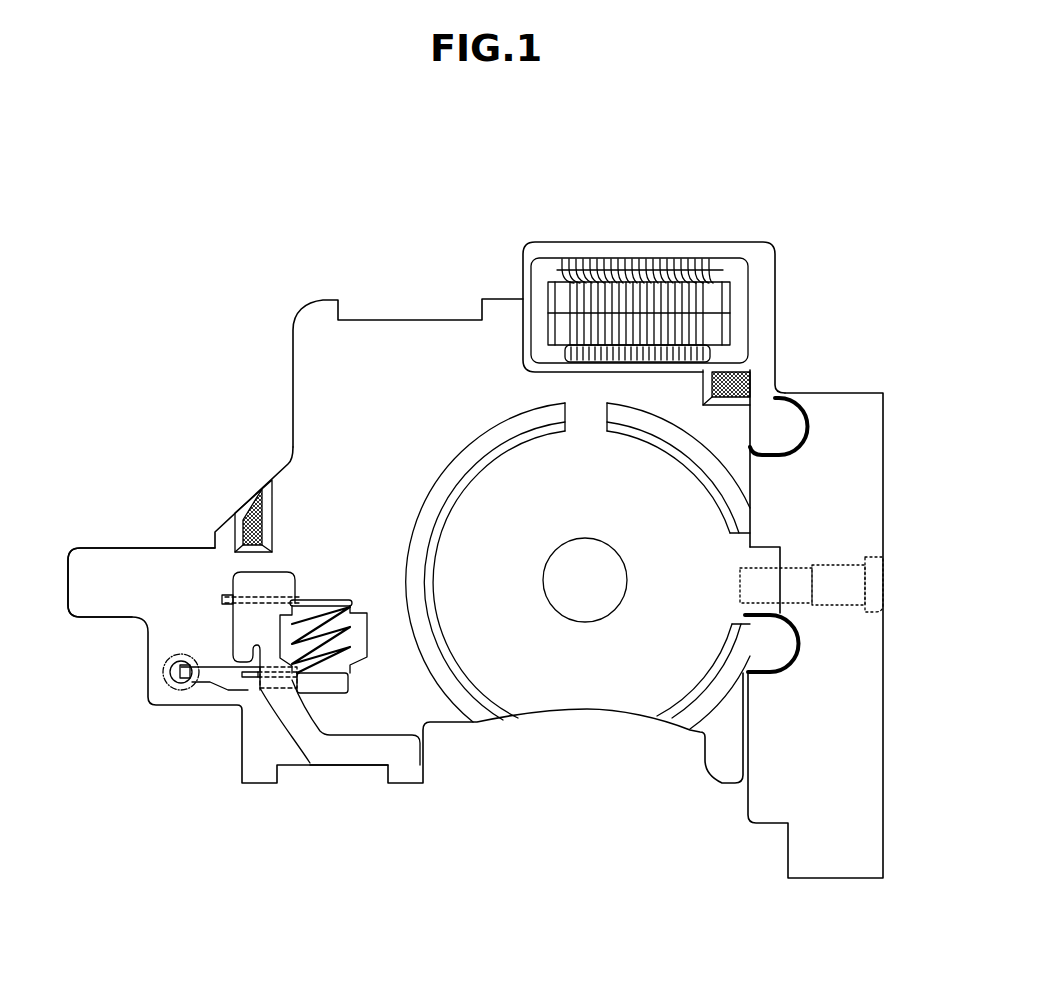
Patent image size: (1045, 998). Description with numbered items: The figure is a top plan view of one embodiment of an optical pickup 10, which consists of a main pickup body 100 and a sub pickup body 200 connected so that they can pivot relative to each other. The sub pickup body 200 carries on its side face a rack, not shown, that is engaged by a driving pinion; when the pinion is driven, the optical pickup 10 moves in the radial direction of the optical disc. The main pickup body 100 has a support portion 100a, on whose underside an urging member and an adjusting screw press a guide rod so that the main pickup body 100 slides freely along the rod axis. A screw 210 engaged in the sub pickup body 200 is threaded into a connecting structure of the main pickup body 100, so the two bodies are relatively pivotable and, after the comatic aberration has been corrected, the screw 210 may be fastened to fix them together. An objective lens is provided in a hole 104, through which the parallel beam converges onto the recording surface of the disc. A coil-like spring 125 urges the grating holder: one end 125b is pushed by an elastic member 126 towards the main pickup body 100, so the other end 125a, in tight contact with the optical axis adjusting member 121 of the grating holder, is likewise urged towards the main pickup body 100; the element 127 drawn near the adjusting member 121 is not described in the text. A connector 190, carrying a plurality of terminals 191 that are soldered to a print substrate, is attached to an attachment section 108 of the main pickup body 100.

The optical pickup 10 is at (405, 287).
The main pickup body 100 is at (328, 388).
The support portion 100a is at (98, 563).
The hole 104 is at (605, 604).
The attachment section 108 is at (755, 308).
The optical axis adjusting member 121 is at (202, 675).
The coil-like spring 125 is at (327, 598).
The other end of the coil-like spring 125a is at (250, 678).
The one end of the coil-like spring 125b is at (225, 597).
The elastic member 126 is at (358, 755).
The pivot shaft 127 is at (170, 654).
The connector 190 is at (647, 260).
The terminals 191 is at (723, 350).
The sub pickup body 200 is at (867, 545).
The screw 210 is at (837, 597).